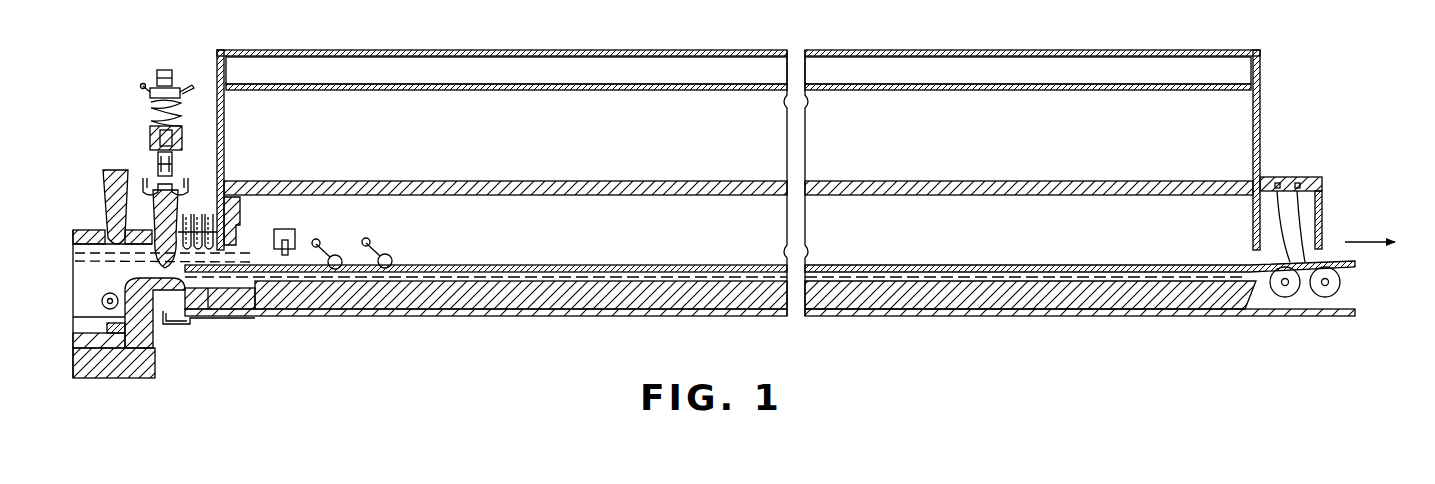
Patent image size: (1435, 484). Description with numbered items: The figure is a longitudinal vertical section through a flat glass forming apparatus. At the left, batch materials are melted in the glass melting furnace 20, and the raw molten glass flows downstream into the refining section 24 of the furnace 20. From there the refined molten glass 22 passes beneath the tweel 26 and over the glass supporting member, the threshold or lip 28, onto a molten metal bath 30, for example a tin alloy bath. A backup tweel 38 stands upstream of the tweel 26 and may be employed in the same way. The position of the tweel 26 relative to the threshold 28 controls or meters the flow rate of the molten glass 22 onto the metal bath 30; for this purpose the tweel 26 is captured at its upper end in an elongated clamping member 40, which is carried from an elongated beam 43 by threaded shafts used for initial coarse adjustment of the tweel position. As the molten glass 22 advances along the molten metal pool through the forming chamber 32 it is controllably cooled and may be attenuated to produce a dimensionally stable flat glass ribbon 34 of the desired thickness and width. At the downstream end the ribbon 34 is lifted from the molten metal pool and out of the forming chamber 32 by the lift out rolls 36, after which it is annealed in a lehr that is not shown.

The glass melting furnace 20 is at (84, 222).
The molten glass 22 is at (76, 318).
The refining section 24 is at (80, 385).
The tweel 26 is at (190, 212).
The threshold 28 is at (166, 292).
The molten metal bath 30 is at (306, 281).
The forming chamber 32 is at (1280, 150).
The flat glass ribbon 34 is at (1356, 264).
The lift out rolls 36 is at (1314, 294).
The backup tweel 38 is at (106, 195).
The clamping member 40 is at (152, 170).
The beam 43 is at (150, 135).